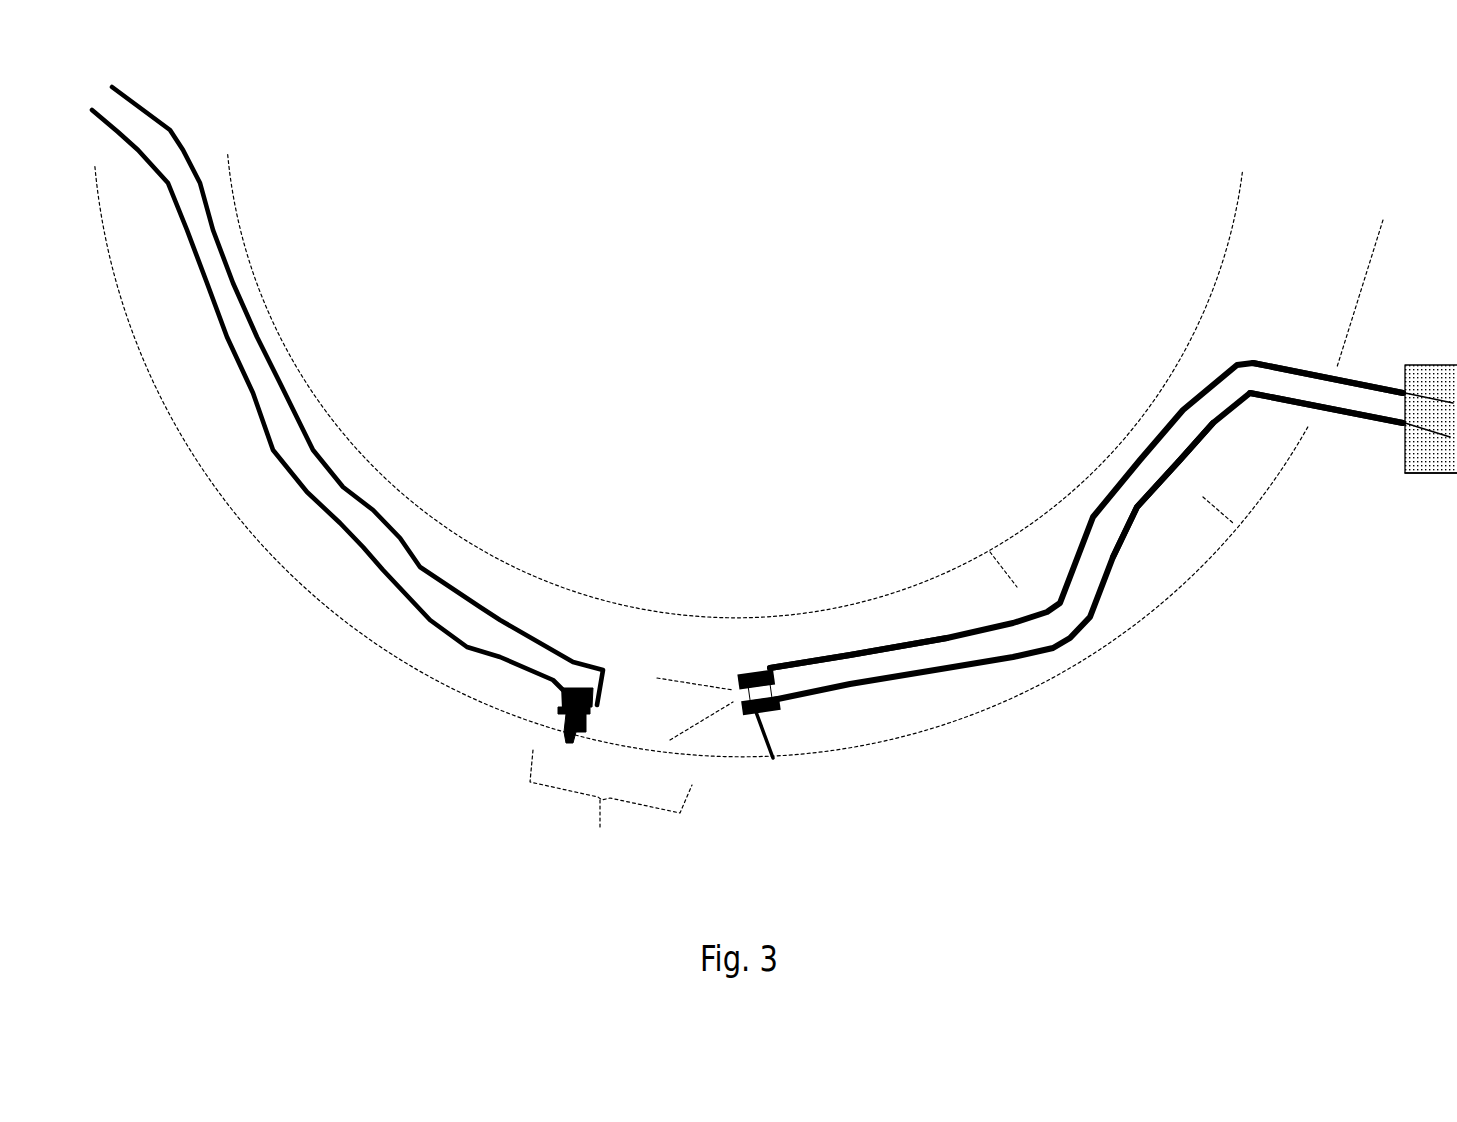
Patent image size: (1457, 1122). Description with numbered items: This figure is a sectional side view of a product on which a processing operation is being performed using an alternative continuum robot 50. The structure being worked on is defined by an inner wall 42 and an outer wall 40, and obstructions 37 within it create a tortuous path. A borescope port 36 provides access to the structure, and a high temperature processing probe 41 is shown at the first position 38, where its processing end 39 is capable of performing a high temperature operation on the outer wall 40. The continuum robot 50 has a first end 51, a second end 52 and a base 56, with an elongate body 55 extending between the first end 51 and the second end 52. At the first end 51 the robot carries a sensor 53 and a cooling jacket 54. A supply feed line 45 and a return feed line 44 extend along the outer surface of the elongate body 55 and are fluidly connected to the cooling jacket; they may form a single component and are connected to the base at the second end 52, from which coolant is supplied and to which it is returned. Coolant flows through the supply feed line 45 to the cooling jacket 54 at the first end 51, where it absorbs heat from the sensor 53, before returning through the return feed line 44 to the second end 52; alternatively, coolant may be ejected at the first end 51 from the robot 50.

The borescope port 36 is at (1328, 591).
The obstructions 37 is at (1005, 563).
The first position 38 is at (611, 811).
The processing end 39 is at (419, 780).
The outer wall 40 is at (702, 480).
The high temperature processing probe 41 is at (347, 396).
The inner wall 42 is at (735, 386).
The return feed line 44 is at (1350, 230).
The supply feed line 45 is at (1406, 714).
The continuum robot 50 is at (919, 597).
The first end 51 is at (820, 432).
The second end 52 is at (1326, 514).
The sensor 53 is at (742, 578).
The cooling jacket 54 is at (845, 803).
The elongate body 55 is at (1196, 594).
The base 56 is at (1431, 275).